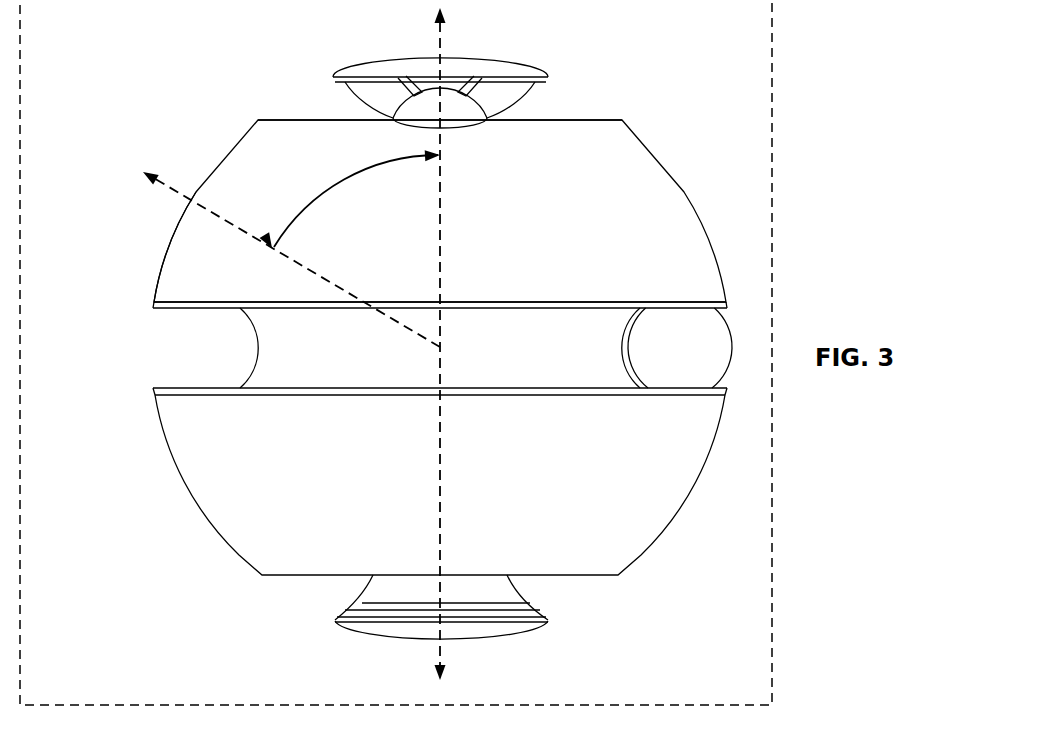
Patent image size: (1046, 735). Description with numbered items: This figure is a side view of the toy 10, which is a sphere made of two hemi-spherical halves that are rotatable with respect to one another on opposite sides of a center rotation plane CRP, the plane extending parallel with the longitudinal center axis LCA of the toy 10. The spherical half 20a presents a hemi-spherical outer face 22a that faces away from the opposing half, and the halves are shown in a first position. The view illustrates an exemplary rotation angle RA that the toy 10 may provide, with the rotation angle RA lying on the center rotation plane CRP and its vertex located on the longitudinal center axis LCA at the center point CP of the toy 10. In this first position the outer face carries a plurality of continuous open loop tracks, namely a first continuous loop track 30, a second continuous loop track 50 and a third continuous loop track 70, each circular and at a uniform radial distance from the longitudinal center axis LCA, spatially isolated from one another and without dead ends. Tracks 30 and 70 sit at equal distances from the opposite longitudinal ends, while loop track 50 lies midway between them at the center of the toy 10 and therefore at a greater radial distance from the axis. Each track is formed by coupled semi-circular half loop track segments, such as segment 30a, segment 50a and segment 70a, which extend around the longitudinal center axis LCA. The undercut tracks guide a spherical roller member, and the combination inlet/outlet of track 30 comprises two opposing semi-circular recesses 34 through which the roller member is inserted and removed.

The toy 10 is at (160, 58).
The spherical half 20a is at (175, 135).
The spherical half outer face 22a is at (160, 222).
The first continuous loop track 30 is at (378, 162).
The semi-circular half loop track segment 30a is at (555, 112).
The semi-circular recess 34 is at (413, 101).
The second continuous loop track 50 is at (350, 378).
The semi-circular half loop track segment 50a is at (303, 370).
The third continuous loop track 70 is at (418, 528).
The semi-circular half loop track segment 70a is at (378, 590).
The longitudinal center axis LCA is at (471, 347).
The rotation angle RA is at (291, 248).
The center point CP is at (440, 347).
The center rotation plane CRP is at (700, 664).